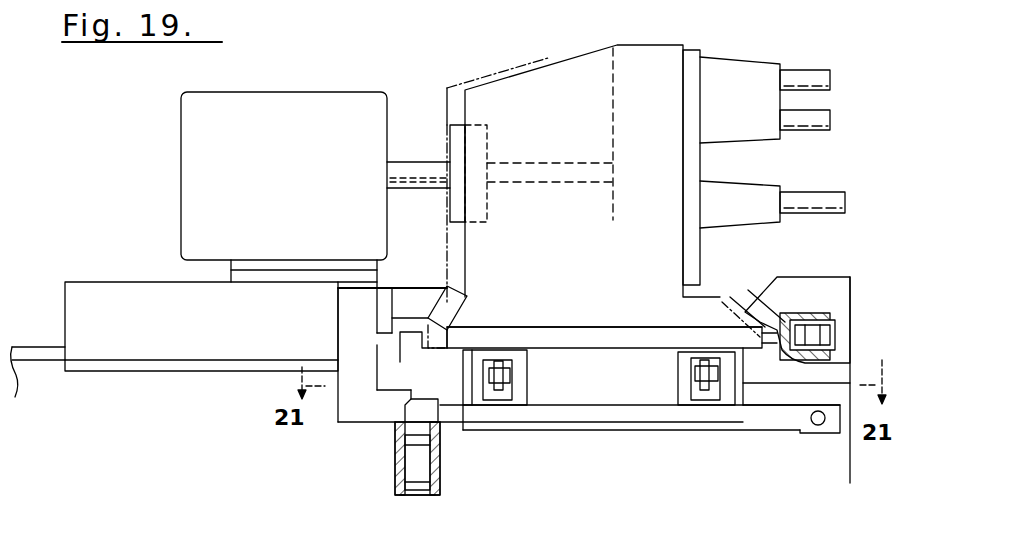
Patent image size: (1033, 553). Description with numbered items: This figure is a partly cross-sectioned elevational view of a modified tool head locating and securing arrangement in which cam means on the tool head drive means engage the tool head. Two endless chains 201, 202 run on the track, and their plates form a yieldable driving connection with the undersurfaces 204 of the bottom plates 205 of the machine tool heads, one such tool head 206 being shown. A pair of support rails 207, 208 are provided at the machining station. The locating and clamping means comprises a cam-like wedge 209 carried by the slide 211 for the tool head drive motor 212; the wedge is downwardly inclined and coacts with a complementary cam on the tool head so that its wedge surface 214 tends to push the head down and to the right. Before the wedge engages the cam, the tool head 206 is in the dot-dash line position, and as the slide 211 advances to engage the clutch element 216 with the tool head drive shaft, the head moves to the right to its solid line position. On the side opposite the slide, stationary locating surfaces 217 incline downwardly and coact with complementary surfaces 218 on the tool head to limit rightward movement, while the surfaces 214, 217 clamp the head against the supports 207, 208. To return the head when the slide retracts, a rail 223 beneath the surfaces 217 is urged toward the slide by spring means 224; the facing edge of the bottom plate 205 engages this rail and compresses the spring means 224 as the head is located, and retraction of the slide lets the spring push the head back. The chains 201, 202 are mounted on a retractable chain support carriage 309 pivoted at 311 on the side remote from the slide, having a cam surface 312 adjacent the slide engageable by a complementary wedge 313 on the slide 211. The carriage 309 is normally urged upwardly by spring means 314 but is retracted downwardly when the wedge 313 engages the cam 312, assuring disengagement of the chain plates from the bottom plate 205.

The endless chain 201 is at (512, 376).
The endless chain 202 is at (694, 374).
The undersurface of bottom plate 204 is at (540, 353).
The bottom plate 205 is at (644, 338).
The tool head 206 is at (445, 100).
The support rail 207 is at (455, 370).
The support rail 208 is at (768, 372).
The cam-like wedge 209 is at (418, 290).
The slide 211 is at (178, 345).
The tool head drive motor 212 is at (190, 153).
The wedge surface 214 is at (466, 307).
The clutch element 216 is at (455, 128).
The stationary locating surface 217 is at (748, 296).
The complementary surface 218 is at (765, 322).
The rail 223 is at (763, 328).
The spring means 224 is at (836, 334).
The retractable chain support carriage 309 is at (610, 432).
The pivot 311 is at (818, 427).
The cam surface 312 is at (407, 403).
The wedge 313 is at (412, 412).
The spring means 314 is at (415, 448).